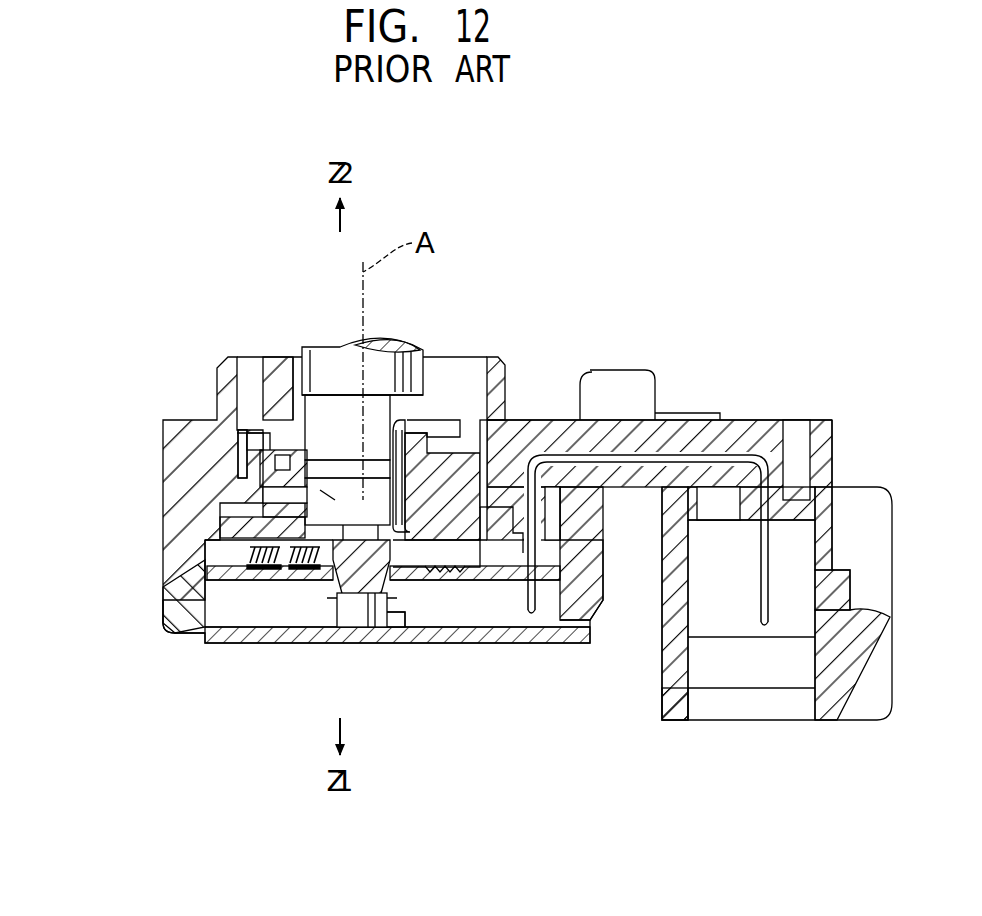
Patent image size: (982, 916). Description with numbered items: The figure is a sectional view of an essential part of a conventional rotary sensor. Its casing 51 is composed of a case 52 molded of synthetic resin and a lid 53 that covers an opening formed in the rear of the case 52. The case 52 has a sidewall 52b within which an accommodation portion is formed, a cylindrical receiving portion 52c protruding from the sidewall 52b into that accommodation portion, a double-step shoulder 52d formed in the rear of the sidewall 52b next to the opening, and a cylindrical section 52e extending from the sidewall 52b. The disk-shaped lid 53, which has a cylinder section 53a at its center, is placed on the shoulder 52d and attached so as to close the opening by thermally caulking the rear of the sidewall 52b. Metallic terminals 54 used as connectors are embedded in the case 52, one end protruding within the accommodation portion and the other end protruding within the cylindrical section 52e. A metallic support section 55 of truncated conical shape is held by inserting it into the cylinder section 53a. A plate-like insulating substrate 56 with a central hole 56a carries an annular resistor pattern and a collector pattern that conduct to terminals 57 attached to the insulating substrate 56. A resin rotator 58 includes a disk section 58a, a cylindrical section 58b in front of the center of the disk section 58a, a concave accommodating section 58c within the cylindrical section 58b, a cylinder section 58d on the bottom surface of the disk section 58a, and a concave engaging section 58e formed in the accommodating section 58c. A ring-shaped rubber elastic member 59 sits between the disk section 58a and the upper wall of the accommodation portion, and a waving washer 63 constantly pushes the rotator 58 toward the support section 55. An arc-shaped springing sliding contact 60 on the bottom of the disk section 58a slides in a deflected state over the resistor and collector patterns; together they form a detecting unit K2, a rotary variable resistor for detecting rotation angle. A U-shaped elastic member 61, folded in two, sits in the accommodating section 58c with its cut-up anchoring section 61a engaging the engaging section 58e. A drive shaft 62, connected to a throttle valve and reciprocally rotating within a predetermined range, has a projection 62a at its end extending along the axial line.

The casing 51 is at (163, 642).
The case 52 is at (503, 358).
The sidewall 52b is at (163, 425).
The cylindrical receiving portion 52c is at (230, 405).
The double-step shoulder 52d is at (205, 550).
The cylindrical section 52e is at (855, 700).
The lid 53 is at (478, 647).
The cylinder section 53a is at (400, 646).
The metallic terminals 54 is at (740, 600).
The metallic support section 55 is at (355, 625).
The insulating substrate 56 is at (255, 650).
The hole 56a is at (300, 640).
The terminals 57 is at (545, 622).
The rotator 58 is at (480, 620).
The disk section 58a is at (263, 518).
The cylindrical section 58b is at (300, 400).
The concave accommodating section 58c is at (263, 458).
The cylinder section 58d is at (432, 620).
The concave engaging section 58e is at (470, 430).
The elastic member 59 is at (245, 455).
The sliding contact 60 is at (263, 528).
The elastic member 61 is at (340, 460).
The anchoring section 61a is at (412, 420).
The drive shaft 62 is at (408, 340).
The projection 62a is at (310, 395).
The waving washer 63 is at (545, 420).
The detecting unit K2 is at (240, 555).